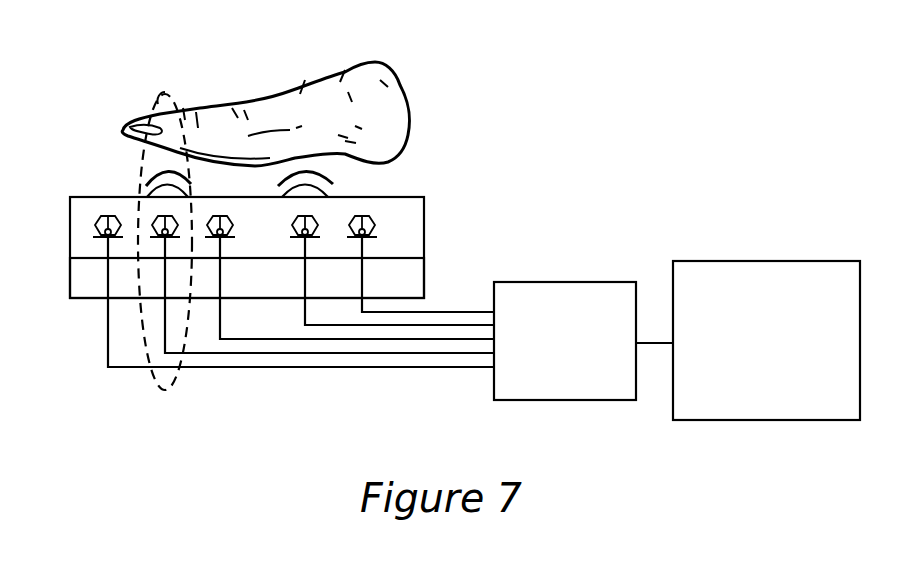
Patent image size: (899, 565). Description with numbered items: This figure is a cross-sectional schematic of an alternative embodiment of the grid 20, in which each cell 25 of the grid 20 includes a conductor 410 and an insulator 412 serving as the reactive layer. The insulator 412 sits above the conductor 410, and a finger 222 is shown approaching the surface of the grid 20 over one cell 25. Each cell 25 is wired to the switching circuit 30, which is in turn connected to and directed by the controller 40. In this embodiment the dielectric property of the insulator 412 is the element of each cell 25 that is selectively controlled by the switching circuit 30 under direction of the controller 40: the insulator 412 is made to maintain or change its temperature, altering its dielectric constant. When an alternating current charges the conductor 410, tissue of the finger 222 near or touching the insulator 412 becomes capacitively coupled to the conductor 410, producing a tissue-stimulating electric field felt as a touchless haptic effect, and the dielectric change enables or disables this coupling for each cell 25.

The finger 222 is at (366, 82).
The cell 25 is at (144, 185).
The grid 20 is at (272, 227).
The insulator 412 is at (247, 237).
The conductor 410 is at (247, 278).
The switching circuit 30 is at (565, 341).
The controller 40 is at (766, 340).